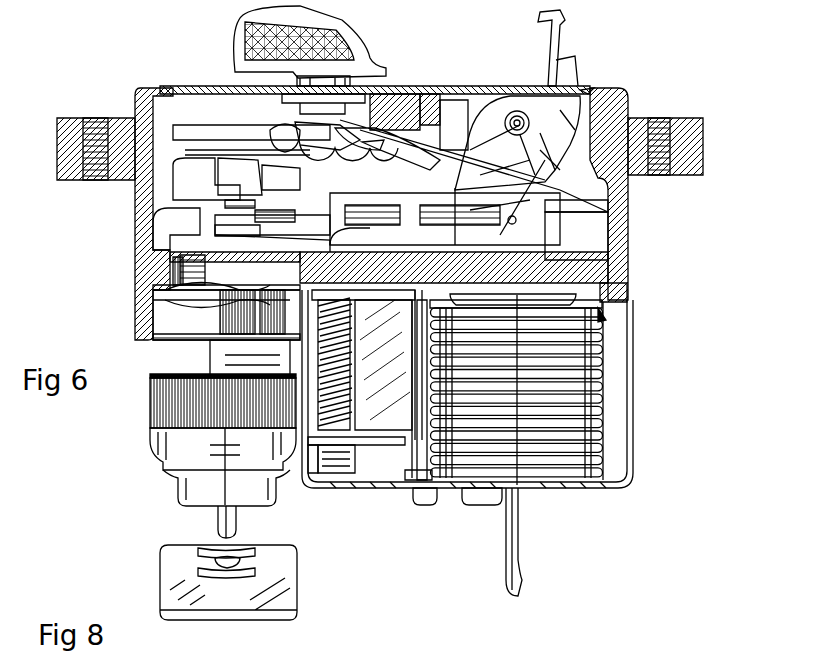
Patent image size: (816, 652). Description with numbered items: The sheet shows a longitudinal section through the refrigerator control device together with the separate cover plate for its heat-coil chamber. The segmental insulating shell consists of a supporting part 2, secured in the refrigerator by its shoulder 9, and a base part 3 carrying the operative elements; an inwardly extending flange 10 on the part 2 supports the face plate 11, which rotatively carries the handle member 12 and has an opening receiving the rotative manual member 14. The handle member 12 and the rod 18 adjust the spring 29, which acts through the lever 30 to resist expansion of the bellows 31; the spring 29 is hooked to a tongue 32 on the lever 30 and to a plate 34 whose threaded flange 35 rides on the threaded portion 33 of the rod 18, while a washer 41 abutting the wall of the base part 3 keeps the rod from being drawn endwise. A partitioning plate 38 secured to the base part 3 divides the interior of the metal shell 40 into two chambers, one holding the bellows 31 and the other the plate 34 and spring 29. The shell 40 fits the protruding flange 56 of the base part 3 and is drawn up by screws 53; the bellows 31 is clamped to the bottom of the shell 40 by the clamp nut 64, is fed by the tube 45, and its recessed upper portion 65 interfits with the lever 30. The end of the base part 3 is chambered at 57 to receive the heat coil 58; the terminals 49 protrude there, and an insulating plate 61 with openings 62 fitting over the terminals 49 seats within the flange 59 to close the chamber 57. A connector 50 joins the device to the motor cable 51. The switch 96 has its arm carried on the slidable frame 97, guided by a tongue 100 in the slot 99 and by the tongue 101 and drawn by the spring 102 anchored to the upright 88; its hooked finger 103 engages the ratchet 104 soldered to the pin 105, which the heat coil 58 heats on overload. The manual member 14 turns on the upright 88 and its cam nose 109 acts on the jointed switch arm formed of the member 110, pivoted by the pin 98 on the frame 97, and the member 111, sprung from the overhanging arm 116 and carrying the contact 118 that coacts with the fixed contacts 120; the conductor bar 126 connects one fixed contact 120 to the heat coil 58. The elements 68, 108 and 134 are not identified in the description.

In FIG. 6, the supporting shell part 2 is at (143, 100).
In FIG. 6, the base part 3 is at (622, 250).
In FIG. 6, the shoulder 9 is at (614, 100).
In FIG. 6, the inwardly extending flange 10 is at (586, 88).
In FIG. 6, the face plate 11 is at (390, 86).
In FIG. 6, the handle member 12 is at (300, 30).
In FIG. 6, the rotative manual member 14 is at (546, 42).
In FIG. 6, the adjusting rod 18 is at (335, 90).
In FIG. 6, the spring 29 is at (406, 480).
In FIG. 6, the lever 30 is at (516, 302).
In FIG. 6, the bellows 31 is at (585, 405).
In FIG. 6, the tongue 32 is at (365, 320).
In FIG. 6, the threaded portion 33 is at (337, 474).
In FIG. 6, the plate 34 is at (372, 420).
In FIG. 6, the threaded flange 35 is at (312, 473).
In FIG. 6, the partitioning plate 38 is at (419, 445).
In FIG. 6, the shell 40 is at (627, 455).
In FIG. 6, the washer 41 is at (272, 312).
In FIG. 6, the tube 45 is at (506, 572).
In FIG. 6, the terminals 49 is at (160, 390).
In FIG. 6, the connector 50 is at (170, 445).
In FIG. 6, the cable 51 is at (218, 523).
In FIG. 6, the screws 53 is at (426, 505).
In FIG. 6, the protruding flange 56 is at (628, 293).
In FIG. 6, the heat coil chamber 57 is at (160, 300).
In FIG. 6, the heat coil 58 is at (235, 290).
In FIG. 6, the flange 59 is at (148, 338).
In FIG. 6, the insulating cover plate 61 is at (230, 312).
In FIG. 8, the insulating cover plate 61 is at (284, 597).
In FIG. 8, the openings 62 is at (255, 572).
In FIG. 6, the clamp nut 64 is at (485, 505).
In FIG. 6, the recessed portion 65 is at (620, 346).
In FIG. 6, the plate edge 68 is at (165, 381).
In FIG. 6, the upright 88 is at (612, 212).
In FIG. 6, the switch 96 is at (237, 172).
In FIG. 6, the slidable frame 97 is at (447, 159).
In FIG. 6, the pin 98 is at (548, 226).
In FIG. 6, the slot 99 is at (383, 365).
In FIG. 6, the tongue 100 is at (359, 364).
In FIG. 6, the tongue 101 is at (272, 233).
In FIG. 6, the spring 102 is at (445, 202).
In FIG. 6, the hooked finger 103 is at (270, 218).
In FIG. 6, the ratchet wheel 104 is at (238, 230).
In FIG. 6, the pin 105 is at (225, 340).
In FIG. 6, the pivot 108 is at (505, 143).
In FIG. 6, the cam nose 109 is at (460, 130).
In FIG. 6, the switch arm member 110 is at (412, 130).
In FIG. 6, the switch arm member 111 is at (300, 140).
In FIG. 6, the overhanging arm 116 is at (278, 140).
In FIG. 6, the movable contact 118 is at (240, 183).
In FIG. 6, the fixed contacts 120 is at (190, 205).
In FIG. 6, the conductor bar 126 is at (150, 226).
In FIG. 6, the core step 134 is at (185, 470).